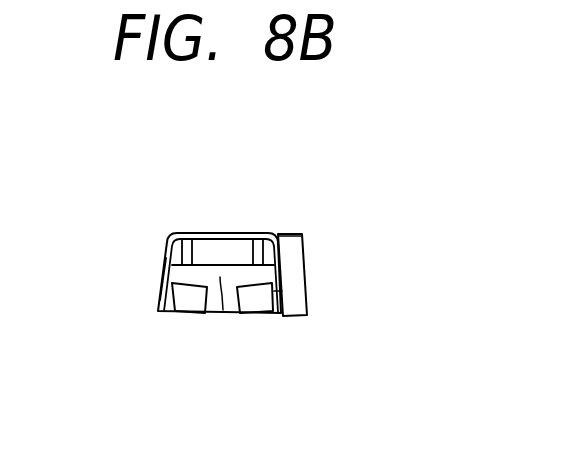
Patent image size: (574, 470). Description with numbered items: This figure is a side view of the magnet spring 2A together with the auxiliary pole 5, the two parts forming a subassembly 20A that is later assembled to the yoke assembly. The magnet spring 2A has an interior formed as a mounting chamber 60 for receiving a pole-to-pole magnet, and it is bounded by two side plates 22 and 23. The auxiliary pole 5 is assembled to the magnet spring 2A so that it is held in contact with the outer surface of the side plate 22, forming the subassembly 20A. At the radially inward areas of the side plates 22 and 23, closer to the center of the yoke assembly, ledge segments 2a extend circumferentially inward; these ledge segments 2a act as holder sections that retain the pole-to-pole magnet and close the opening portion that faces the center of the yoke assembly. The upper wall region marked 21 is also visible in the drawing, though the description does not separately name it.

The subassembly 20A is at (304, 214).
The magnet spring 2A is at (198, 215).
The top panel 21 is at (225, 234).
The side plate 22 is at (294, 252).
The auxiliary pole 5 is at (295, 285).
The side plate 23 is at (167, 262).
The ledge segment 2a is at (187, 316).
The mounting chamber 60 is at (223, 310).